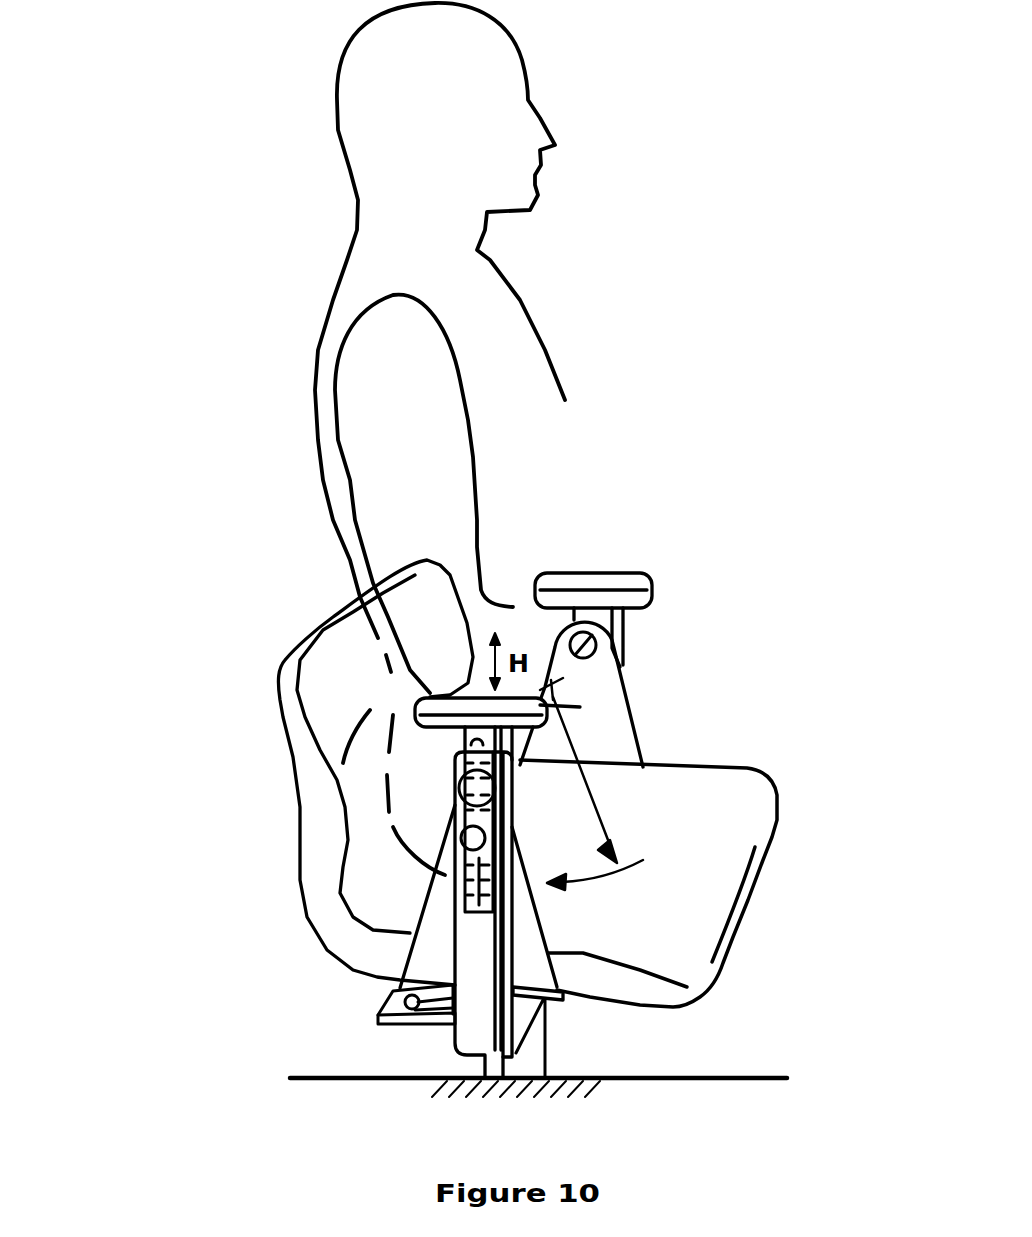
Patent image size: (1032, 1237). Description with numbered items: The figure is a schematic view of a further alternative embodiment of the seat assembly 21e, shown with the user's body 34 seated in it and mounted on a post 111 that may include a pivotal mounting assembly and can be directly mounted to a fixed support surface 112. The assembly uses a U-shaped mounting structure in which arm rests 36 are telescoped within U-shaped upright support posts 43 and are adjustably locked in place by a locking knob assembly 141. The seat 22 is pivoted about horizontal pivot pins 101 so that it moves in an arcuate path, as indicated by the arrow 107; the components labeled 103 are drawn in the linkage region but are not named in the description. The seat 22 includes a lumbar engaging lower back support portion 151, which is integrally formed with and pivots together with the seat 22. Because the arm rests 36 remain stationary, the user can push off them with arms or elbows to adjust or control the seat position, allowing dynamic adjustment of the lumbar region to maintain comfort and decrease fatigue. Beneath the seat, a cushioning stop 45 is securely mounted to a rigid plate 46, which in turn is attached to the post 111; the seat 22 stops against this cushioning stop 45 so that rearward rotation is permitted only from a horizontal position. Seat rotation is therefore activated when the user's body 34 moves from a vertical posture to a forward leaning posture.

The user's body 34 is at (532, 312).
The lumbar engaging lower back support portion 151 is at (273, 690).
The seat assembly 21e is at (247, 778).
The arm rests 36 is at (457, 707).
The upright support posts 43 is at (627, 633).
The locking knob assembly 141 is at (461, 840).
The pivot link 103 is at (610, 740).
The horizontal pivot pins 101 is at (595, 650).
The arrow 107 is at (607, 827).
The seat 22 is at (723, 827).
The cushioning stop 45 is at (375, 1003).
The rigid plate 46 is at (410, 1025).
The post 111 is at (523, 1058).
The fixed support surface 112 is at (713, 1080).